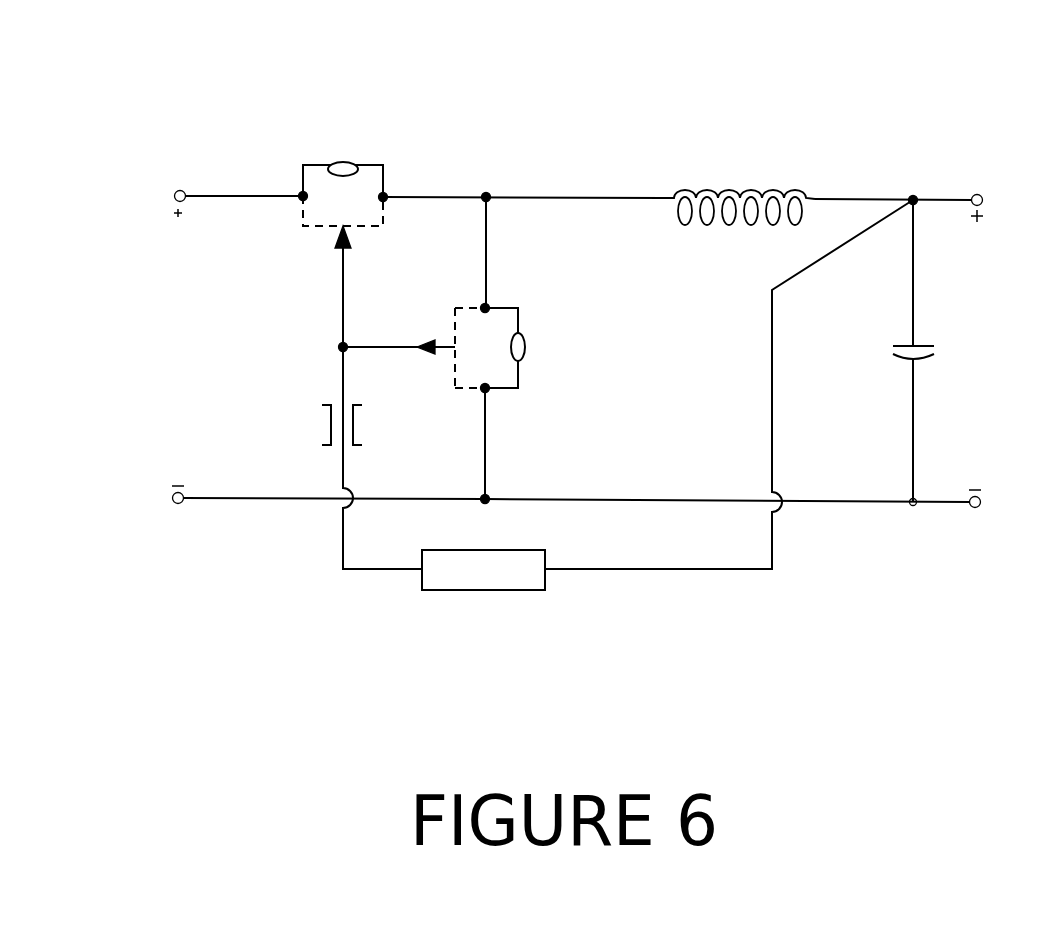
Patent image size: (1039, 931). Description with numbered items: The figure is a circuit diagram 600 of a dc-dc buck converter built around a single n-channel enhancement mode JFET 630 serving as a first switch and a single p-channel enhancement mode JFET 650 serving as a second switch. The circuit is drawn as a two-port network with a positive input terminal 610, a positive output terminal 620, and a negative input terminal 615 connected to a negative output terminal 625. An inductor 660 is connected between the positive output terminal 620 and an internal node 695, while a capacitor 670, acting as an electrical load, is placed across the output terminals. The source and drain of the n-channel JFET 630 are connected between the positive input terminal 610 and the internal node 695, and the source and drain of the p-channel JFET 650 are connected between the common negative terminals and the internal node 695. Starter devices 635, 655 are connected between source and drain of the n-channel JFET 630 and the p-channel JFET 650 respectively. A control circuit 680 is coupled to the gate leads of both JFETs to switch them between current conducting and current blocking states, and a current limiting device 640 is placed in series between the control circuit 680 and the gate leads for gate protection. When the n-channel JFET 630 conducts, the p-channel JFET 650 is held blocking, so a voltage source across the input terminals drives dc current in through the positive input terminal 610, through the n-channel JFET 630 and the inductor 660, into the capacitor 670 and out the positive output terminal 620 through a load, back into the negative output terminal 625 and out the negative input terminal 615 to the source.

The circuit diagram 600 is at (77, 79).
The positive input terminal 610 is at (177, 190).
The negative input terminal 615 is at (176, 504).
The positive output terminal 620 is at (980, 193).
The negative output terminal 625 is at (977, 507).
The n-channel enhancement mode JFET 630 is at (313, 228).
The starter device 635 is at (352, 162).
The current limiting device 640 is at (325, 447).
The p-channel enhancement mode JFET 650 is at (455, 378).
The starter device 655 is at (525, 352).
The inductor 660 is at (695, 183).
The capacitor 670 is at (940, 352).
The control circuit 680 is at (525, 591).
The internal node 695 is at (492, 192).